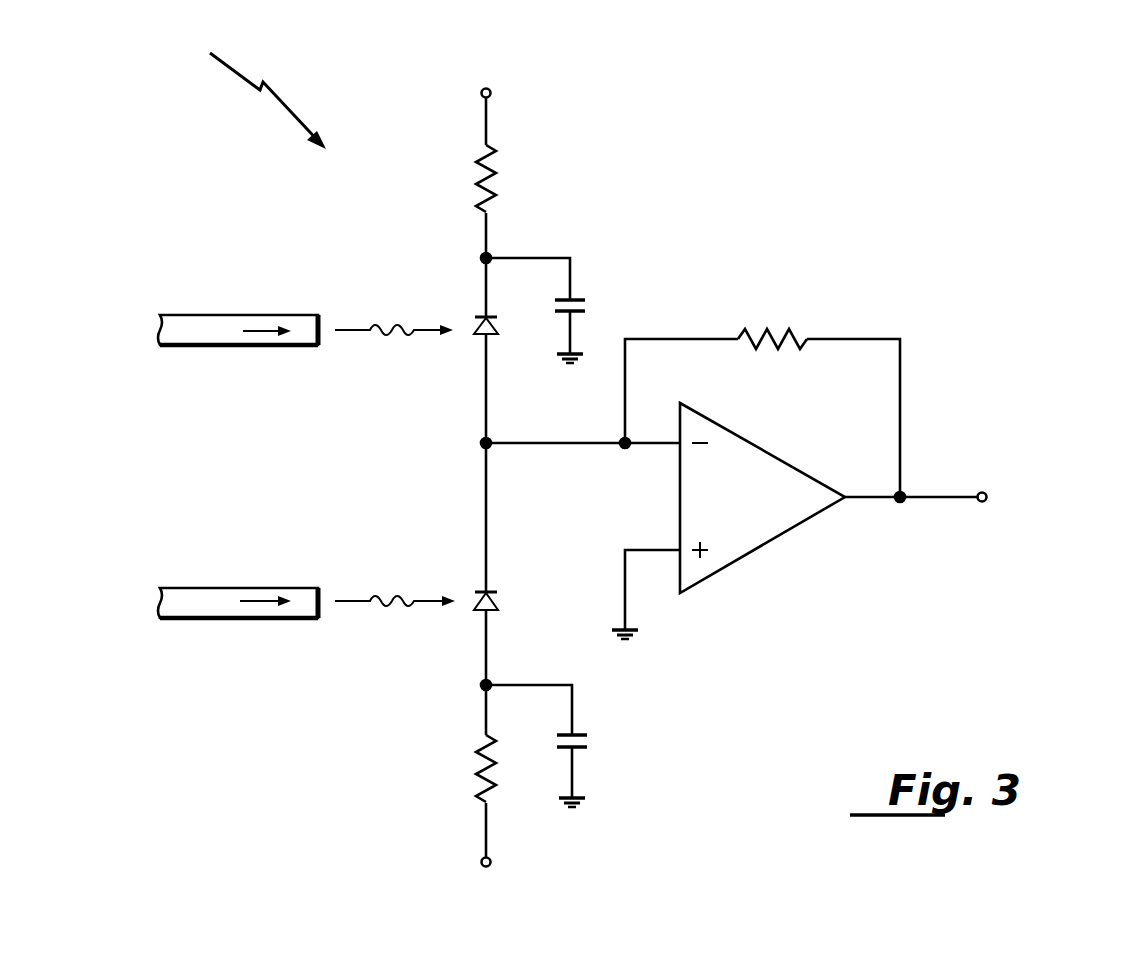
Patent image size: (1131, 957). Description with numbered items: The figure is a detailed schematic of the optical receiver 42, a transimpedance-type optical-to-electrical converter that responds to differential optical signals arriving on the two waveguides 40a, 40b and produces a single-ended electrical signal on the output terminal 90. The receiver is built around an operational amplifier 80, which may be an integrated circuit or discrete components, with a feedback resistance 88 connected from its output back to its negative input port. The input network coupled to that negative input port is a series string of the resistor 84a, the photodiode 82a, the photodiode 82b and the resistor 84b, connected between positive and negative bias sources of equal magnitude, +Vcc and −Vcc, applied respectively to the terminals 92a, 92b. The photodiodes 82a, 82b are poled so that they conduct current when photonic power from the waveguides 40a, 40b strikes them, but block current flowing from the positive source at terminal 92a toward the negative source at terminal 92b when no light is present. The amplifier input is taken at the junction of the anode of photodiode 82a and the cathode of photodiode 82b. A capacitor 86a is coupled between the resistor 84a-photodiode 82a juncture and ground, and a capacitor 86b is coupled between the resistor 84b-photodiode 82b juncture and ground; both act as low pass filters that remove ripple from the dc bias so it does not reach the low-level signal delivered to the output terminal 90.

The optical receiver 42 is at (256, 86).
The waveguide 40a is at (185, 322).
The waveguide 40b is at (183, 595).
The photodiode 82a is at (518, 333).
The photodiode 82b is at (497, 604).
The resistor 84a is at (497, 181).
The resistor 84b is at (478, 765).
The capacitor 86a is at (612, 291).
The capacitor 86b is at (612, 732).
The feedback resistance 88 is at (766, 333).
The operational amplifier 80 is at (760, 445).
The output terminal 90 is at (985, 493).
The terminal 92a is at (482, 92).
The terminal 92b is at (482, 865).